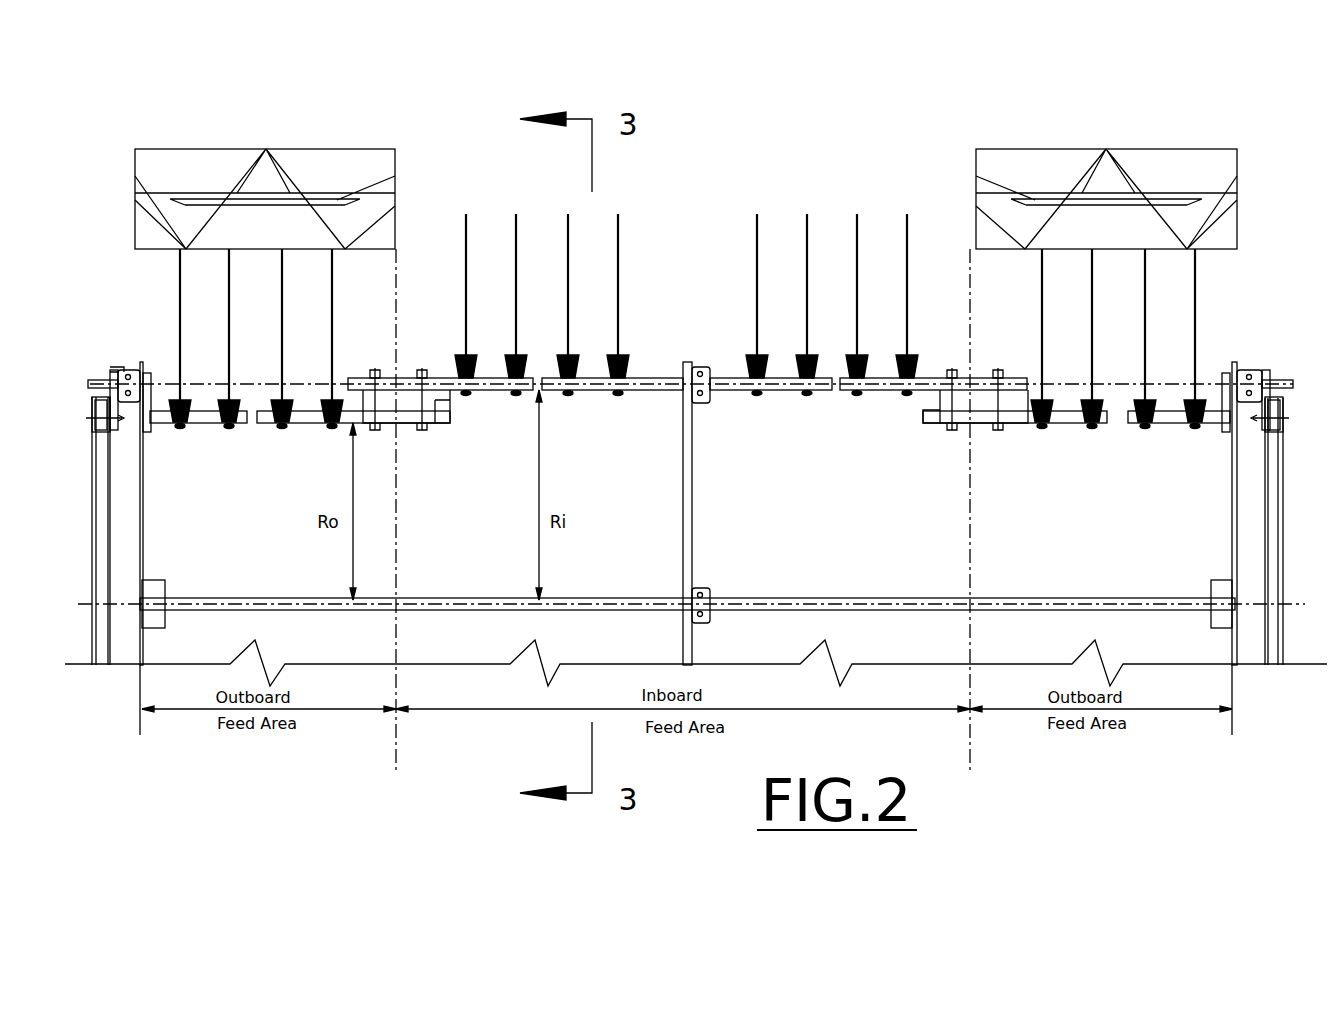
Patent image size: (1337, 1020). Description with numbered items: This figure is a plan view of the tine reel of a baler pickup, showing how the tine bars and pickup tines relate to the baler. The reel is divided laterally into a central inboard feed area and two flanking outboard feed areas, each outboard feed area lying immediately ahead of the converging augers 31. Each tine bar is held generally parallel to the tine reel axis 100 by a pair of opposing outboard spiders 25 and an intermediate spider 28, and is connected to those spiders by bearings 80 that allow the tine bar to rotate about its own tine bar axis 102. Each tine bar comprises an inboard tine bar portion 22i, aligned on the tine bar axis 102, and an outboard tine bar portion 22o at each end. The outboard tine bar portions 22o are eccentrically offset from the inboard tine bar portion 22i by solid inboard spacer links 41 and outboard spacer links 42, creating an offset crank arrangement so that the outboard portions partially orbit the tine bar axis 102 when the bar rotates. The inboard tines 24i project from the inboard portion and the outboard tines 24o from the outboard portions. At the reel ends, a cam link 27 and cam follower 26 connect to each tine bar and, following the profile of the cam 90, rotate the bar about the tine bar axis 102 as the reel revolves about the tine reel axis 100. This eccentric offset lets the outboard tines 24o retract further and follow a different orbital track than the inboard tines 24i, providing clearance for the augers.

The inboard tine bar portion 22i is at (638, 392).
The outboard tine bar portion 22o is at (312, 425).
The inboard tines 24i is at (516, 214).
The outboard tines 24o is at (229, 323).
The outboard spider 25 is at (140, 548).
The cam follower 26 is at (105, 432).
The cam link 27 is at (1262, 398).
The intermediate spider 28 is at (692, 541).
The converging augers 31 is at (318, 150).
The inboard spacer link 41 is at (450, 396).
The outboard spacer link 42 is at (151, 408).
The bearing 80 is at (128, 368).
The cam 90 is at (110, 505).
The tine reel axis 100 is at (90, 602).
The tine bar axis 102 is at (102, 384).